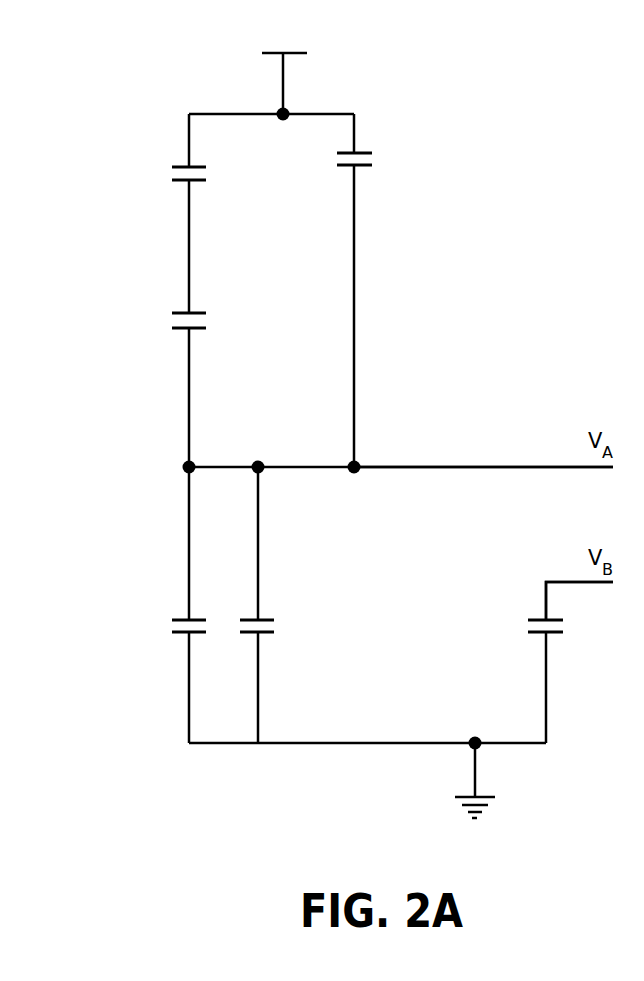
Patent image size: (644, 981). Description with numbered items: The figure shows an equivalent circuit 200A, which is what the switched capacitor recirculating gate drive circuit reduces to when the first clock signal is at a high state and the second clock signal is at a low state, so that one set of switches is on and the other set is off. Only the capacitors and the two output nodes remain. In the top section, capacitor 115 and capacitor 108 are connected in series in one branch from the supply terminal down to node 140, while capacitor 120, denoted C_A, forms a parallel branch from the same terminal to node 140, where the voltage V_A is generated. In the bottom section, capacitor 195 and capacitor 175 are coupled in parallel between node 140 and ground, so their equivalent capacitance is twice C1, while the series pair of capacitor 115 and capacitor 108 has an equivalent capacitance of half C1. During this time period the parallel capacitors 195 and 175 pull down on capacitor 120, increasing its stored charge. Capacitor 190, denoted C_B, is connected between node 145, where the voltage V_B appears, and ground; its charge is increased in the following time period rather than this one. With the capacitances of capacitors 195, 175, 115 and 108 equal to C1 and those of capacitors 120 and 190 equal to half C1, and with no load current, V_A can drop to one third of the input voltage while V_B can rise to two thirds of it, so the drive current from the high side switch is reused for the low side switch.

The equivalent circuit 200A is at (157, 60).
The capacitor 115 is at (183, 166).
The capacitor 120 is at (362, 151).
The capacitor 108 is at (182, 312).
The capacitor 195 is at (182, 619).
The capacitor 175 is at (265, 619).
The capacitor 190 is at (537, 618).
The node 140 is at (487, 465).
The node 145 is at (570, 581).